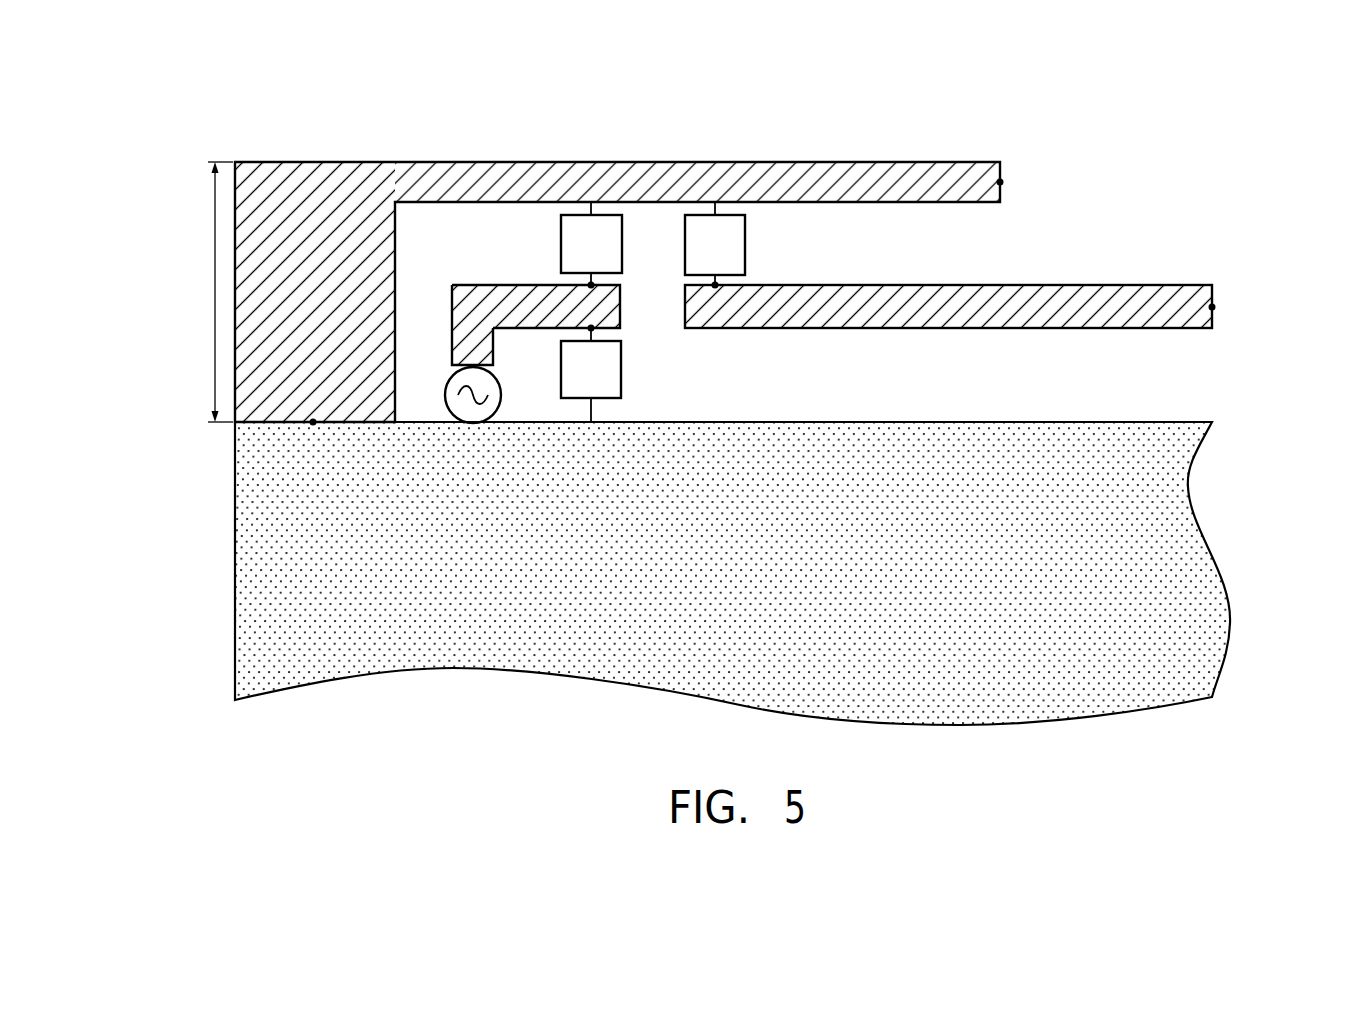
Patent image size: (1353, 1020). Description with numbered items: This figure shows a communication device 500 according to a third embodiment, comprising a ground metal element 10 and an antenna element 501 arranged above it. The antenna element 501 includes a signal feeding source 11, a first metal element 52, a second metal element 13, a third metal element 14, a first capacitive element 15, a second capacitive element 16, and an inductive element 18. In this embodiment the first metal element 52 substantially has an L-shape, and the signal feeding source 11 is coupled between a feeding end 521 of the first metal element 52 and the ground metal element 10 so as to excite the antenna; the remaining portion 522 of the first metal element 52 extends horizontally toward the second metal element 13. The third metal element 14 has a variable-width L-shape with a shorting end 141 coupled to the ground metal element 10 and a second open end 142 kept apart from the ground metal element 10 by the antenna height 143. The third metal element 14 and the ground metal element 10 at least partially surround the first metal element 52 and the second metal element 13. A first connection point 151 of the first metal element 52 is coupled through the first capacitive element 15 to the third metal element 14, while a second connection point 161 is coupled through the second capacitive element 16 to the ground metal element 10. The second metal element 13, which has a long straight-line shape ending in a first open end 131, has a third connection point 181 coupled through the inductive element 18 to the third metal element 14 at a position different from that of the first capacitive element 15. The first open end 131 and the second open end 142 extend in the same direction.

The communication device 500 is at (163, 74).
The antenna element 501 is at (310, 147).
The ground metal element 10 is at (1115, 675).
The signal feeding source 11 is at (445, 394).
The second metal element 13 is at (940, 310).
The first open end 131 is at (1212, 307).
The third metal element 14 is at (850, 192).
The shorting end 141 is at (313, 422).
The second open end 142 is at (1000, 182).
The antenna height 143 is at (199, 292).
The first capacitive element 15 is at (622, 240).
The first connection point 151 is at (591, 286).
The second capacitive element 16 is at (560, 370).
The second connection point 161 is at (591, 328).
The inductive element 18 is at (745, 245).
The third connection point 181 is at (715, 286).
The first metal element 52 is at (586, 302).
The feeding end 521 is at (468, 360).
The second feed section 522 is at (622, 307).